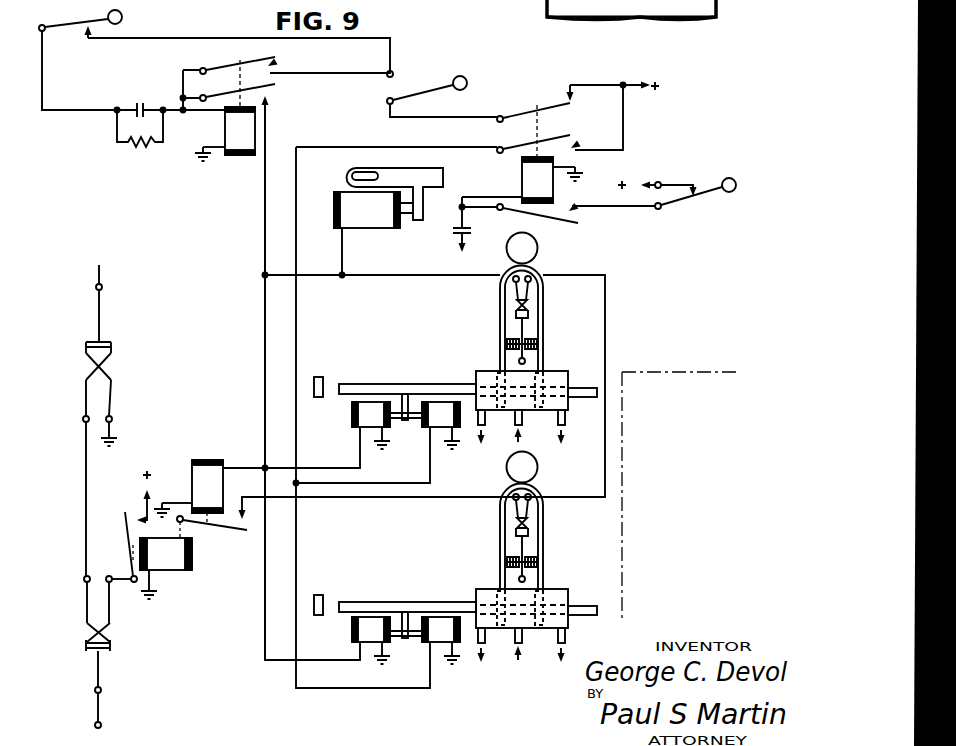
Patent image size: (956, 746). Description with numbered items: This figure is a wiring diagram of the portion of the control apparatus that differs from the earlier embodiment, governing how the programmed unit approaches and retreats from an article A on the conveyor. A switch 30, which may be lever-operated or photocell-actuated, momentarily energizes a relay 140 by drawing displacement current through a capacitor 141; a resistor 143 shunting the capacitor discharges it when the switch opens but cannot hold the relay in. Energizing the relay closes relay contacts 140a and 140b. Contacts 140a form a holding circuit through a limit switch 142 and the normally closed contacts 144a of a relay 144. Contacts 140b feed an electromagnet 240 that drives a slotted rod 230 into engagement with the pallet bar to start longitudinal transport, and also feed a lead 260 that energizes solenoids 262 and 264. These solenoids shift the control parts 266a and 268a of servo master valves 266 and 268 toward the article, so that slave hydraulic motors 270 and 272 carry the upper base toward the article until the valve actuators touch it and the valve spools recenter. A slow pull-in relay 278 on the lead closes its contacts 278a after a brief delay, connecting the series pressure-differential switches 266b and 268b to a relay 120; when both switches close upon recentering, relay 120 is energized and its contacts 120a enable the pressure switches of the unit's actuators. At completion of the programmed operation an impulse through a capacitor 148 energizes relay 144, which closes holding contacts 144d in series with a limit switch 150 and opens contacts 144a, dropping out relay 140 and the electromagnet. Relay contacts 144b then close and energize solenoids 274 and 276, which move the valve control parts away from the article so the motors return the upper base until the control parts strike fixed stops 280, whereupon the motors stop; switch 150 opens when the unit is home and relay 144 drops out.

The switch 30 is at (100, 27).
The capacitor 141 is at (140, 102).
The resistor 143 is at (133, 150).
The relay 140 is at (225, 127).
The relay contacts 140a is at (275, 62).
The relay contacts 140b is at (275, 90).
The limit switch 142 is at (432, 86).
The relay 144 is at (522, 173).
The relay contacts 144a is at (562, 102).
The relay contacts 144b is at (590, 137).
The holding contacts 144d is at (582, 216).
The limit switch 150 is at (697, 192).
The rod 230 is at (412, 168).
The electromagnet 240 is at (372, 225).
The capacitor 148 is at (457, 232).
The lead 260 is at (284, 278).
The slave hydraulic motor 270 is at (538, 248).
The pressure-differential switch 266b is at (516, 302).
The servo master valve 266 is at (471, 370).
The valve control part 266a is at (380, 384).
The fixed stops 280 is at (318, 377).
The solenoid 262 is at (352, 420).
The solenoid 274 is at (425, 428).
The slave hydraulic motor 272 is at (539, 464).
The pressure-differential switch 268b is at (516, 522).
The servo master valve 268 is at (471, 588).
The valve control part 268a is at (394, 602).
The solenoid 264 is at (352, 630).
The solenoid 276 is at (420, 643).
The relay 278 is at (208, 460).
The relay contacts 278a is at (250, 531).
The relay 120 is at (172, 568).
The relay contacts 120a is at (130, 514).
The article A is at (718, 372).